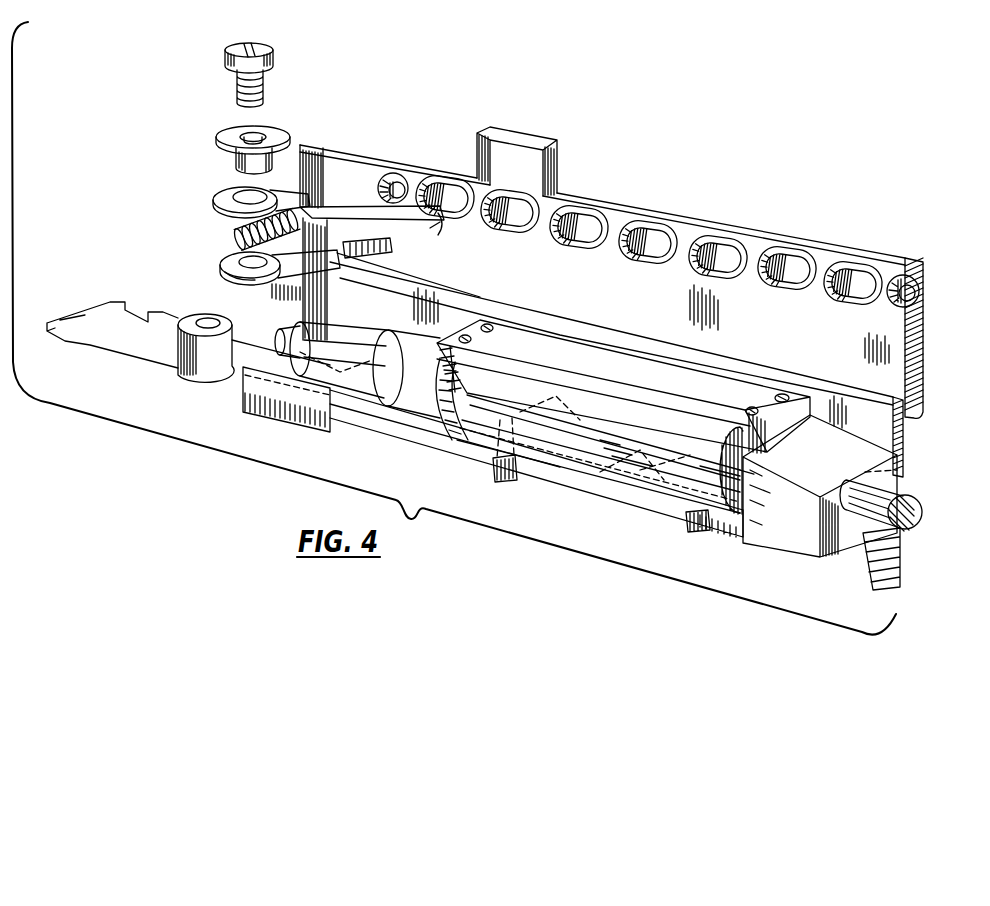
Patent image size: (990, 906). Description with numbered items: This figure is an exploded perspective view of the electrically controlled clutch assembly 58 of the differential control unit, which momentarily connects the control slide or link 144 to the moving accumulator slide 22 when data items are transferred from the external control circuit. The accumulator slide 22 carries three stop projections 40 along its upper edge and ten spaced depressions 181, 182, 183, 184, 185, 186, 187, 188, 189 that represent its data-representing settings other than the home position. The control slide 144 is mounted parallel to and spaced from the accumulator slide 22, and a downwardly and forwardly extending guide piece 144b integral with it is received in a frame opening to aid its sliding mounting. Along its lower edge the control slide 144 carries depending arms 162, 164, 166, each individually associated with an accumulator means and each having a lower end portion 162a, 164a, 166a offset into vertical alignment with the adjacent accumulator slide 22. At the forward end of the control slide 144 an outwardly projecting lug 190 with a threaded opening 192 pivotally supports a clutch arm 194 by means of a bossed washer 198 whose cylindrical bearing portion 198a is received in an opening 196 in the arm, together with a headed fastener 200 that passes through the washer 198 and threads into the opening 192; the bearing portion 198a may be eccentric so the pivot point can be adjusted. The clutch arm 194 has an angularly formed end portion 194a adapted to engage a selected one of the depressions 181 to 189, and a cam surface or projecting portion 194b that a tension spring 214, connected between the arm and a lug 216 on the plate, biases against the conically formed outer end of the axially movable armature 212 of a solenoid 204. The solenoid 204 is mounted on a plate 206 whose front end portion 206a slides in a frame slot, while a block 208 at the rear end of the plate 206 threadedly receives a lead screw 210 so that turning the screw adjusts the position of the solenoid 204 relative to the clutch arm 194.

The accumulator slide 22 is at (895, 345).
The stop projections 40 is at (515, 142).
The clutch assembly 58 is at (795, 76).
The control slide or link 144 is at (883, 437).
The guide piece 144b is at (268, 408).
The depending arm 162 is at (448, 446).
The lower end portion 162a is at (492, 474).
The depending arm 164 is at (665, 468).
The lower end portion 164a is at (690, 523).
The depending arm 166 is at (897, 470).
The lower end portion 166a is at (886, 563).
The depression 181 is at (392, 172).
The depression 182 is at (448, 178).
The depression 183 is at (523, 199).
The depression 184 is at (582, 222).
The depression 185 is at (644, 240).
The depression 186 is at (723, 252).
The depression 187 is at (790, 272).
The depression 188 is at (860, 285).
The depression 189 is at (905, 285).
The lug 190 is at (222, 263).
The threaded opening 192 is at (238, 273).
The clutch arm 194 is at (312, 213).
The angularly formed end portion 194a is at (439, 224).
The cam surface or projecting portion 194b is at (392, 252).
The opening 196 is at (214, 200).
The bossed washer 198 is at (234, 132).
The cylindrical bearing portion 198a is at (236, 162).
The headed fastener 200 is at (235, 58).
The solenoid 204 is at (586, 436).
The plate 206 is at (740, 530).
The front end portion 206a is at (77, 320).
The block 208 is at (798, 515).
The lead screw 210 is at (921, 508).
The armature 212 is at (292, 338).
The tension spring 214 is at (232, 240).
The lug 216 is at (185, 350).